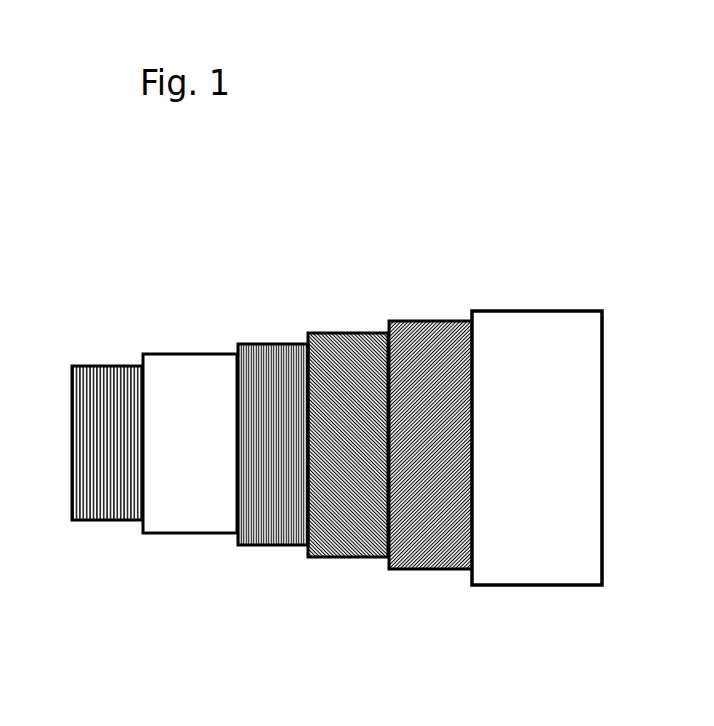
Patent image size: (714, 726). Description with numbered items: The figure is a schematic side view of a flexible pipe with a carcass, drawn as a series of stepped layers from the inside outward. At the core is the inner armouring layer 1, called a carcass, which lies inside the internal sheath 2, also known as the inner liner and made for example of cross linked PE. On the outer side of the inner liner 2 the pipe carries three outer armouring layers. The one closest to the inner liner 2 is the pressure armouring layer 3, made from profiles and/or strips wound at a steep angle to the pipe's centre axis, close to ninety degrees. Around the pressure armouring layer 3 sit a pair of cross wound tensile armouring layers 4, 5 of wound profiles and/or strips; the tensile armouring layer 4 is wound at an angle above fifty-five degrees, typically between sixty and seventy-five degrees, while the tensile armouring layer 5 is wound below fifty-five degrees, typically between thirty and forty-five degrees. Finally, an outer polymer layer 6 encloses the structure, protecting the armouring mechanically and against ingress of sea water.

The inner armouring layer 1 is at (99, 338).
The internal sheath 2 is at (191, 331).
The pressure armouring layer 3 is at (286, 331).
The tensile armouring layer 4 is at (358, 309).
The tensile armouring layer 5 is at (439, 309).
The outer polymer layer 6 is at (556, 274).